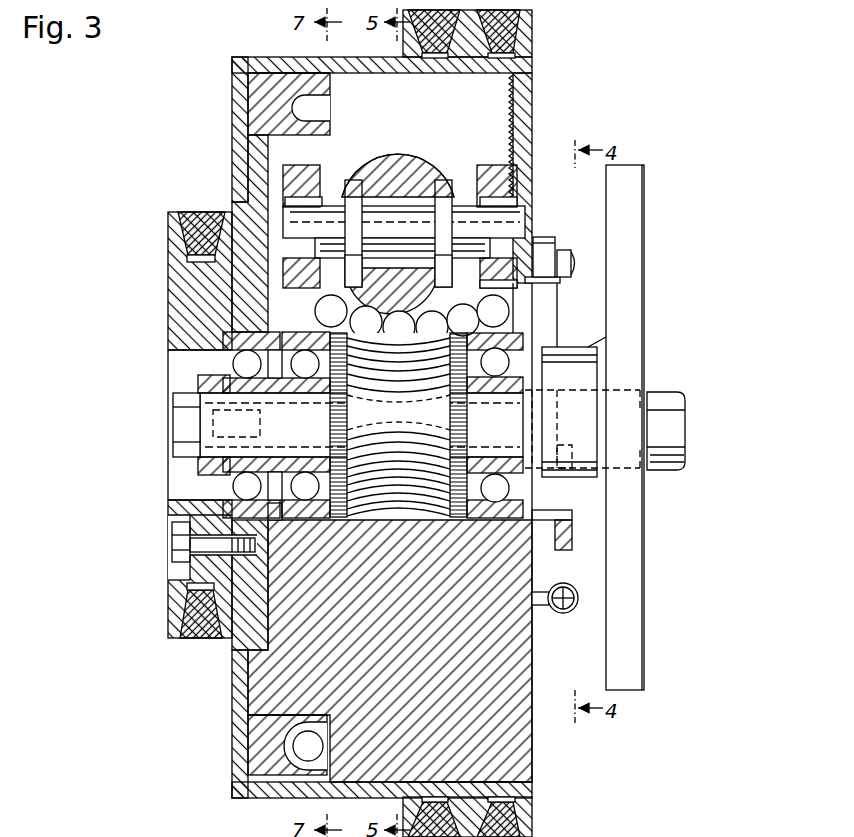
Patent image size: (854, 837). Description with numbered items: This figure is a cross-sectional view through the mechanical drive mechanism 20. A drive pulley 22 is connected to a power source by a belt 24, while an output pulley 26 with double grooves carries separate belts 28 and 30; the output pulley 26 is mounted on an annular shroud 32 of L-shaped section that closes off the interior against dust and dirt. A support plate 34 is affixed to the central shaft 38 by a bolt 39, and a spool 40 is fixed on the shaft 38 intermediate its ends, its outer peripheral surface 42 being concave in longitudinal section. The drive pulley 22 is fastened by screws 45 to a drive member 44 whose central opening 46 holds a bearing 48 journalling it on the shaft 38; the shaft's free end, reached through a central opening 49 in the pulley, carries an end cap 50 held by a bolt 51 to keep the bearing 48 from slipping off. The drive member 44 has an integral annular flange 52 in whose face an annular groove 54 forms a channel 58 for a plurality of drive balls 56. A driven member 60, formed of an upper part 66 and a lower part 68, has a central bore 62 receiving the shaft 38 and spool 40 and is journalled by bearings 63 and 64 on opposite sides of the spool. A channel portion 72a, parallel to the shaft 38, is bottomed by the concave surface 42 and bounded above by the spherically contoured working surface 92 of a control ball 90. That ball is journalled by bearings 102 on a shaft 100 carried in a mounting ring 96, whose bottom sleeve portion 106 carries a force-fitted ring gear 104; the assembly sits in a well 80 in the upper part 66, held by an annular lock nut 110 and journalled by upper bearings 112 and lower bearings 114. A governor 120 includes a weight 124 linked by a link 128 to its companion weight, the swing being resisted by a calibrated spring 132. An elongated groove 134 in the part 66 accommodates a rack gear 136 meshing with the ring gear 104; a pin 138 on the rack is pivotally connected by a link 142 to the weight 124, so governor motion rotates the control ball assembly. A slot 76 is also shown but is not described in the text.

The mechanical drive mechanism 20 is at (112, 627).
The drive pulley 22 is at (178, 267).
The belt 24 is at (200, 228).
The output pulley 26 is at (530, 36).
The belt 28 is at (440, 45).
The belt 30 is at (499, 50).
The annular shroud 32 is at (272, 58).
The support plate 34 is at (638, 230).
The central shaft 38 is at (483, 414).
The bolt 39 is at (672, 426).
The spool 40 is at (338, 527).
The outer peripheral surface 42 is at (392, 518).
The drive member 44 is at (231, 200).
The screws 45 is at (178, 548).
The central opening 46 is at (247, 332).
The bearing 48 is at (232, 490).
The central opening 49 is at (172, 352).
The end cap 50 is at (198, 378).
The bolt 51 is at (186, 425).
The annular flange 52 is at (262, 100).
The annular groove 54 is at (296, 100).
The drive balls 56 is at (312, 746).
The channel 58 is at (292, 120).
The driven member 60 is at (537, 723).
The central bore 62 is at (416, 519).
The bearing 63 is at (308, 505).
The bearing 64 is at (497, 520).
The upper part 66 is at (525, 148).
The lower part 68 is at (500, 652).
The channel portion 72a is at (412, 299).
The slot 76 is at (312, 105).
The well 80 is at (518, 106).
The control ball 90 is at (386, 172).
The spherically contoured working surface 92 is at (399, 156).
The mounting ring 96 is at (297, 208).
The shaft 100 is at (458, 222).
The bearings 102 is at (385, 208).
The ring gear 104 is at (488, 262).
The bottom sleeve portion 106 is at (480, 276).
The annular lock nut 110 is at (493, 182).
The upper bearings 112 is at (300, 200).
The lower bearings 114 is at (303, 290).
The governor 120 is at (595, 200).
The weight 124 is at (547, 327).
The link 128 is at (572, 536).
The calibrated spring 132 is at (576, 610).
The elongated groove 134 is at (527, 233).
The rack gear 136 is at (545, 281).
The pin 138 is at (547, 262).
The link 142 is at (568, 252).